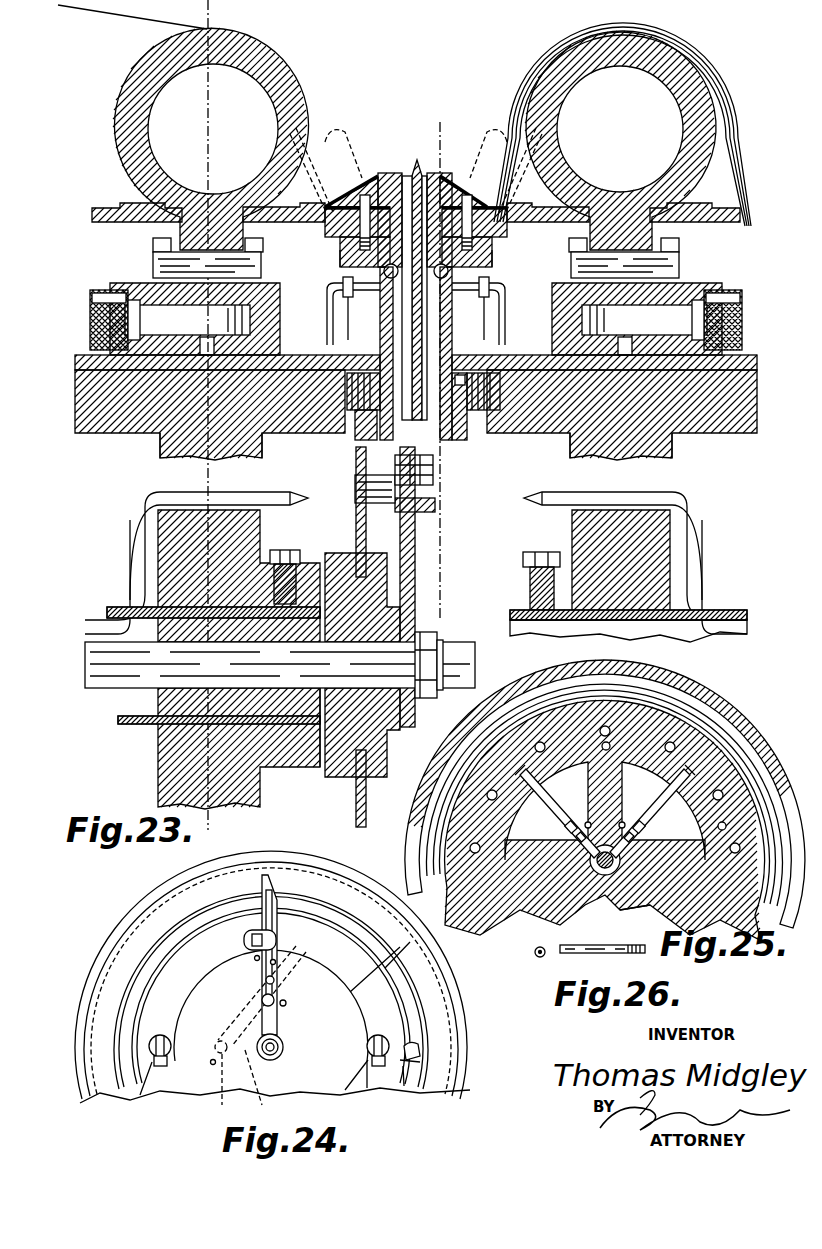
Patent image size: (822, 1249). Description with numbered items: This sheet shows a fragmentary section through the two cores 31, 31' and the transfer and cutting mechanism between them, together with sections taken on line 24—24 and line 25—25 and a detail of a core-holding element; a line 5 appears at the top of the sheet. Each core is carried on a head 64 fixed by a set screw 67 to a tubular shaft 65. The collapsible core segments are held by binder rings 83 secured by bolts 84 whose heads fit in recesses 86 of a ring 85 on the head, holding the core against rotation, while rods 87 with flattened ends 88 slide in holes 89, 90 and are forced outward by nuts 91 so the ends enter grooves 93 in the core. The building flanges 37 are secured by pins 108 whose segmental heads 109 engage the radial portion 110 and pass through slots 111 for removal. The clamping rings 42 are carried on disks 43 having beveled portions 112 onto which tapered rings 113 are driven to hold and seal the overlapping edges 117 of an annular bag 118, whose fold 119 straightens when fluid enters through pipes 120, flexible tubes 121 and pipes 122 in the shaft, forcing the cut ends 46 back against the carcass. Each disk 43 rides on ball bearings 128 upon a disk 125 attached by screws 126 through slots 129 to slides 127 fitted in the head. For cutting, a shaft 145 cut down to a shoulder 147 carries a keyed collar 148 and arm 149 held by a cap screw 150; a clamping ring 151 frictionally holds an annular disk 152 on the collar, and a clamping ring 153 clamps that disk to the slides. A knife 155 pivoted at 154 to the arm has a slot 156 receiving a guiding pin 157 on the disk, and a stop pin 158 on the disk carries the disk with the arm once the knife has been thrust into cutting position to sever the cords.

In FIG. 23, the belt line 5 is at (88, 16).
In FIG. 23, the section line 24— 24 is at (414, 122).
In FIG. 23, the section line 25— 25 is at (190, 8).
In FIG. 23, the core 31 is at (622, 136).
In FIG. 24, the core 31 is at (254, 977).
In FIG. 23, the core 31' is at (187, 139).
In FIG. 23, the building flange 37 is at (306, 205).
In FIG. 24, the building flange 37 is at (410, 975).
In FIG. 23, the clamping ring 42 is at (330, 226).
In FIG. 23, the disk 43 is at (390, 173).
In FIG. 24, the disk 43 is at (112, 1034).
In FIG. 23, the cut ends of the plies 46 is at (310, 130).
In FIG. 23, the head 64 is at (105, 435).
In FIG. 25, the head 64 is at (596, 778).
In FIG. 23, the tubular shaft 65 is at (122, 718).
In FIG. 25, the tubular shaft 65 is at (590, 872).
In FIG. 23, the set screw 67 is at (292, 550).
In FIG. 23, the binder ring 83 is at (150, 290).
In FIG. 23, the bolt 84 is at (90, 300).
In FIG. 23, the ring 85 is at (112, 322).
In FIG. 23, the recess 86 is at (92, 346).
In FIG. 25, the rod 87 is at (586, 822).
In FIG. 26, the rod 87 is at (565, 955).
In FIG. 25, the flattened end 88 is at (525, 790).
In FIG. 26, the flattened end 88 is at (540, 946).
In FIG. 25, the hole 89 is at (680, 785).
In FIG. 25, the hole 90 is at (622, 822).
In FIG. 25, the nut 91 is at (575, 818).
In FIG. 23, the groove 93 is at (160, 440).
In FIG. 25, the groove 93 is at (700, 918).
In FIG. 23, the pin 108 is at (153, 258).
In FIG. 24, the pin 108 is at (420, 1040).
In FIG. 23, the segmental head 109 is at (153, 244).
In FIG. 24, the segmental head 109 is at (422, 1062).
In FIG. 23, the radial portion 110 is at (140, 208).
In FIG. 24, the slot 111 is at (405, 1088).
In FIG. 23, the beveled portion 112 is at (327, 284).
In FIG. 23, the tapered ring 113 is at (350, 255).
In FIG. 23, the overlapping edges 117 is at (340, 252).
In FIG. 23, the annular bag 118 is at (355, 190).
In FIG. 23, the fold 119 is at (406, 193).
In FIG. 23, the pipe 120 is at (418, 308).
In FIG. 23, the flexible tube 121 is at (300, 490).
In FIG. 23, the pipe 122 is at (130, 525).
In FIG. 23, the disk 125 is at (380, 322).
In FIG. 24, the disk 125 is at (176, 1000).
In FIG. 23, the screw 126 is at (356, 490).
In FIG. 24, the screw 126 is at (172, 1046).
In FIG. 23, the slide 127 is at (372, 357).
In FIG. 25, the slide 127 is at (468, 896).
In FIG. 24, the slide 127 is at (152, 1080).
In FIG. 23, the ball bearing 128 is at (388, 278).
In FIG. 24, the slot 129 is at (256, 961).
In FIG. 23, the shaft 145 is at (108, 690).
In FIG. 23, the shoulder 147 is at (320, 768).
In FIG. 23, the collar 148 is at (342, 553).
In FIG. 23, the arm 149 is at (416, 583).
In FIG. 24, the arm 149 is at (282, 1028).
In FIG. 23, the cap screw 150 is at (443, 660).
In FIG. 24, the cap screw 150 is at (283, 1047).
In FIG. 23, the clamping ring 151 is at (362, 550).
In FIG. 23, the annular disk 152 is at (362, 412).
In FIG. 23, the clamping ring 153 is at (365, 440).
In FIG. 23, the pivot 154 is at (433, 476).
In FIG. 24, the pivot 154 is at (275, 1003).
In FIG. 23, the knife 155 is at (412, 170).
In FIG. 24, the knife 155 is at (278, 896).
In FIG. 24, the slot 156 is at (278, 940).
In FIG. 24, the guiding pin 157 is at (275, 980).
In FIG. 24, the stop pin 158 is at (286, 1000).